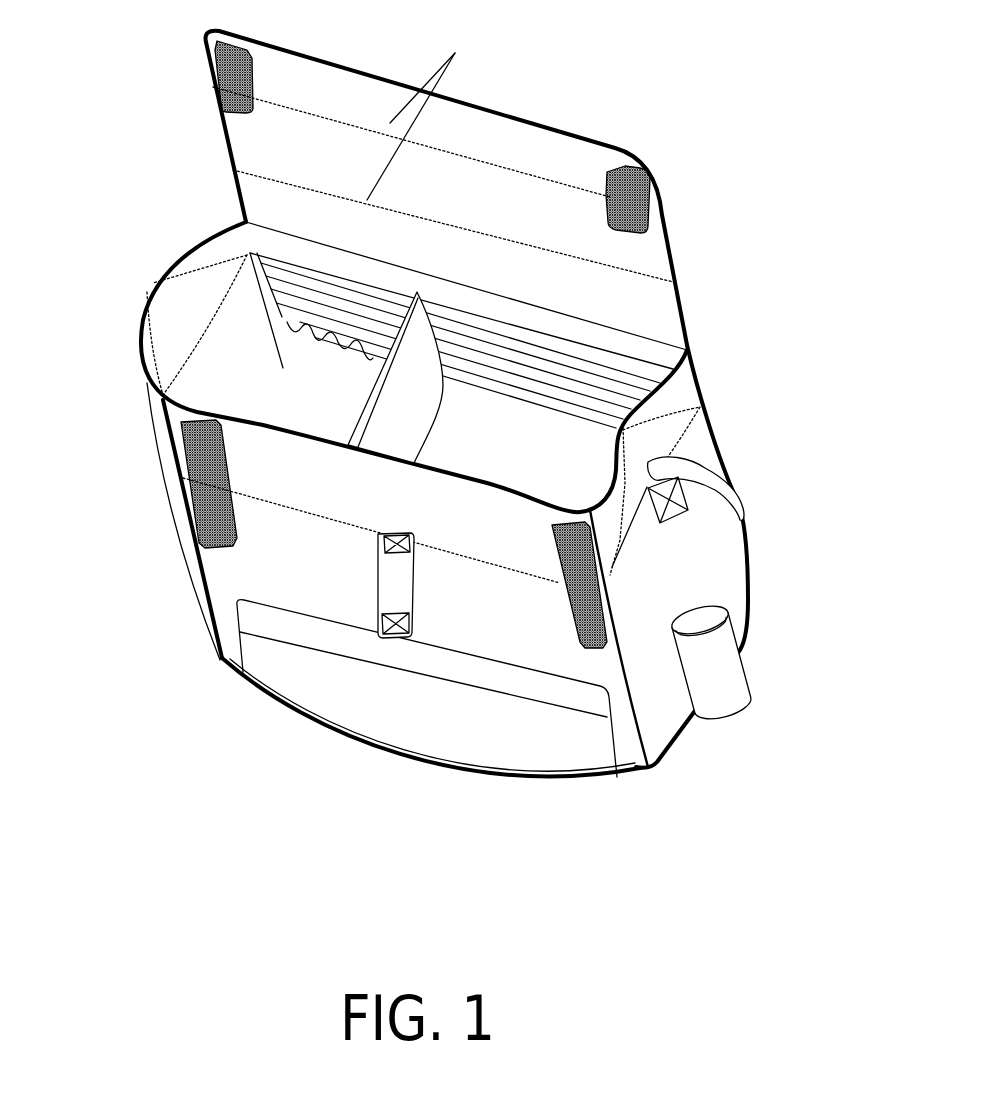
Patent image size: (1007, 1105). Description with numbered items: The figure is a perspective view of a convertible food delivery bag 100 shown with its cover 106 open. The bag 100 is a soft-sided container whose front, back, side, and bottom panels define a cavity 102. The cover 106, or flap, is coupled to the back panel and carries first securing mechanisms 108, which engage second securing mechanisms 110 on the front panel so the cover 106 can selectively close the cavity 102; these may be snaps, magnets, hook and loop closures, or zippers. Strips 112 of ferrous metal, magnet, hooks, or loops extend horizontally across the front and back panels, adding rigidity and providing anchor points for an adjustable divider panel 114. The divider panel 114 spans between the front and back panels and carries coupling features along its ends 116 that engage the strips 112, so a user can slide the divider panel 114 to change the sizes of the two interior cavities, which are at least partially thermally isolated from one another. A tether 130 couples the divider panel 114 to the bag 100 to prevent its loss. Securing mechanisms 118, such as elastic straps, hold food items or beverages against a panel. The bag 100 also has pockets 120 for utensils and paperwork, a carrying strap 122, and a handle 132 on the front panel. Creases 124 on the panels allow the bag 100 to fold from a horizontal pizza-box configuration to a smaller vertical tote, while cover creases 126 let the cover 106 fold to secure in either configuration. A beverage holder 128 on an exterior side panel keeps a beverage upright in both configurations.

The convertible food delivery bag 100 is at (137, 40).
The cavity 102 is at (507, 340).
The cover 106 is at (446, 188).
The first securing mechanisms 108 is at (474, 128).
The second securing mechanisms 110 is at (357, 627).
The strips 112 is at (205, 231).
The divider panel 114 is at (248, 358).
The ends of the divider panel 116 is at (524, 277).
The securing mechanisms 118 is at (150, 335).
The pockets 120 is at (360, 715).
The strap 122 is at (738, 473).
The creases 124 is at (509, 577).
The cover creases 126 is at (439, 120).
The beverage holder 128 is at (734, 696).
The tether 130 is at (455, 184).
The handle 132 is at (462, 692).